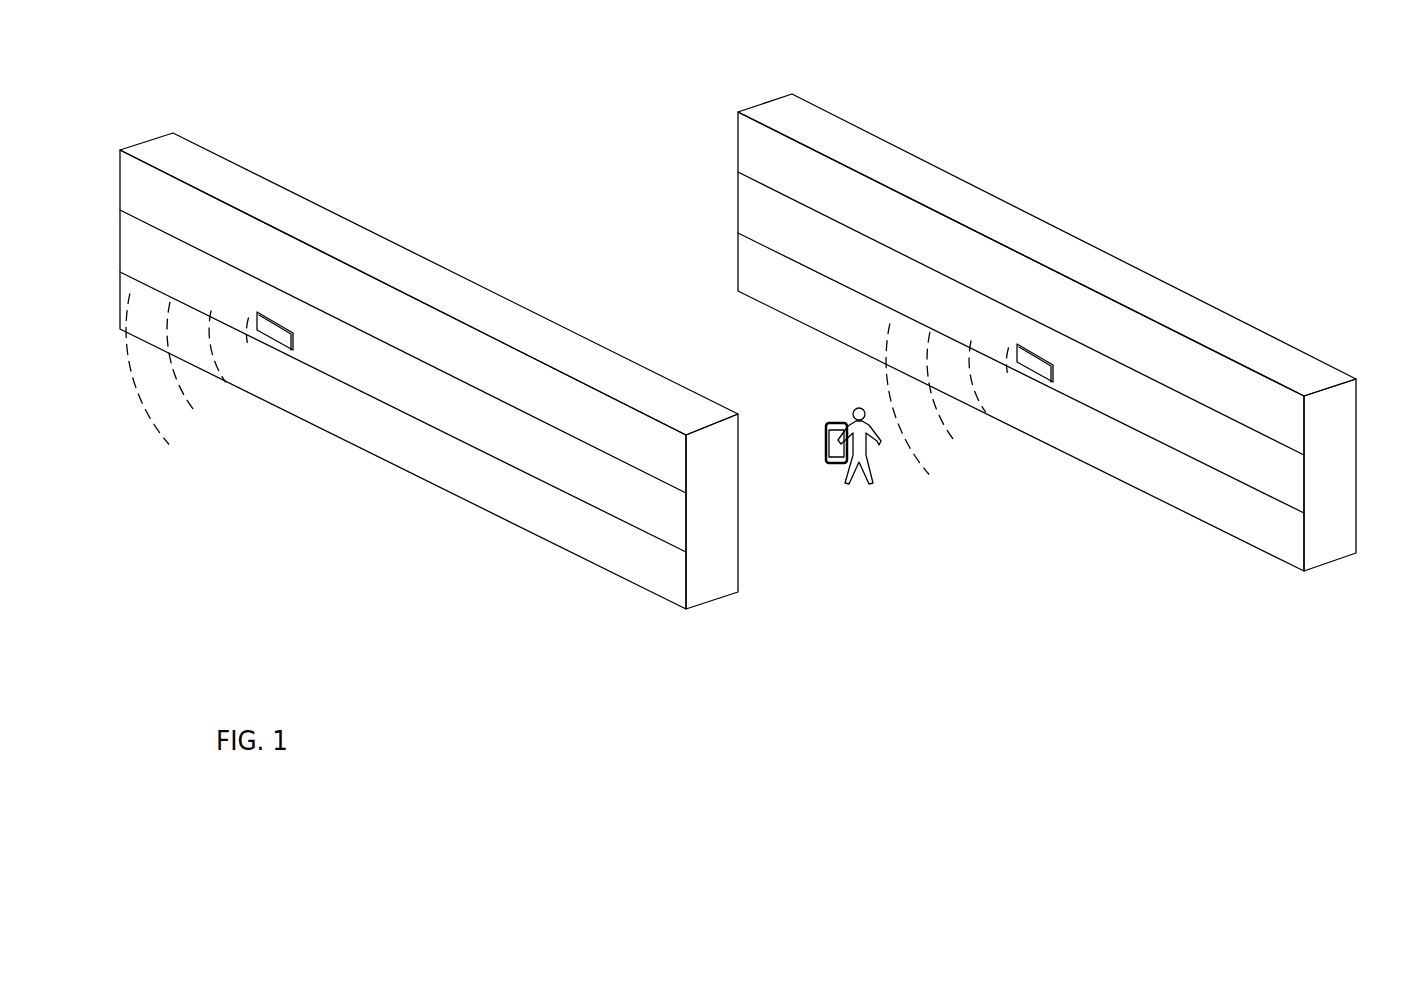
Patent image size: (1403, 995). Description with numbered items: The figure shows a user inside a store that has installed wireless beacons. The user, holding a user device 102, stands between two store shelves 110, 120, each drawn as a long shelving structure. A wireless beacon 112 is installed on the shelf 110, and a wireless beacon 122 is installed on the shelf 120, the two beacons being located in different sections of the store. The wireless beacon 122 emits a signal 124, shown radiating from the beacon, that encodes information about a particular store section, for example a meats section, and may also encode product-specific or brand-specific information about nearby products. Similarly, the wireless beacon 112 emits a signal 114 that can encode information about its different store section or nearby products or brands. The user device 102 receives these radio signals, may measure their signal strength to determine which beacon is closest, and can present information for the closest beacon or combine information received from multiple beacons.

The user device 102 is at (826, 447).
The store shelf 110 is at (724, 597).
The wireless beacon 112 is at (295, 347).
The signal 114 is at (194, 410).
The store shelf 120 is at (1343, 558).
The wireless beacon 122 is at (1055, 378).
The signal 124 is at (954, 440).